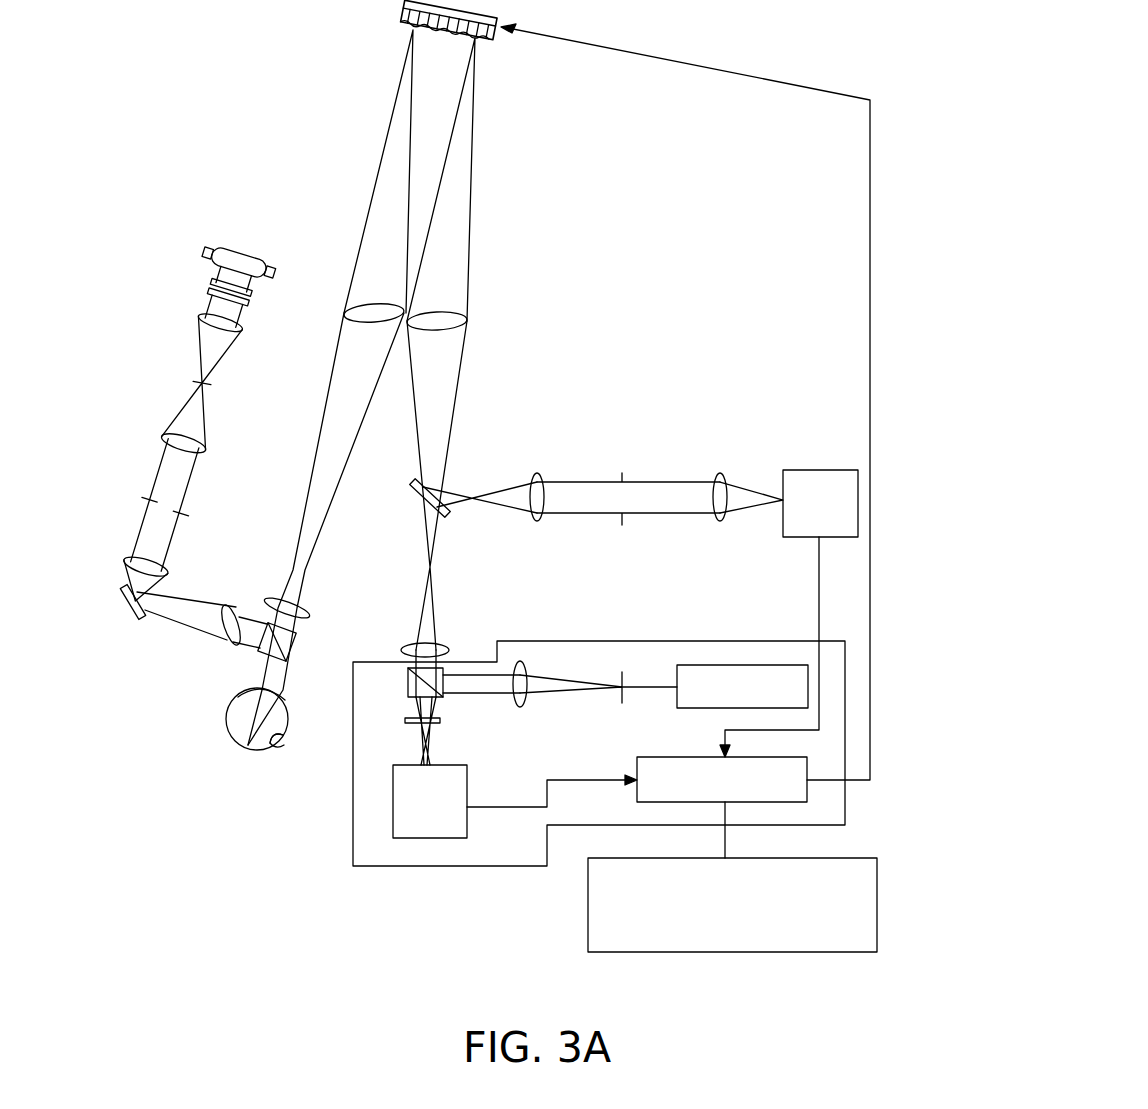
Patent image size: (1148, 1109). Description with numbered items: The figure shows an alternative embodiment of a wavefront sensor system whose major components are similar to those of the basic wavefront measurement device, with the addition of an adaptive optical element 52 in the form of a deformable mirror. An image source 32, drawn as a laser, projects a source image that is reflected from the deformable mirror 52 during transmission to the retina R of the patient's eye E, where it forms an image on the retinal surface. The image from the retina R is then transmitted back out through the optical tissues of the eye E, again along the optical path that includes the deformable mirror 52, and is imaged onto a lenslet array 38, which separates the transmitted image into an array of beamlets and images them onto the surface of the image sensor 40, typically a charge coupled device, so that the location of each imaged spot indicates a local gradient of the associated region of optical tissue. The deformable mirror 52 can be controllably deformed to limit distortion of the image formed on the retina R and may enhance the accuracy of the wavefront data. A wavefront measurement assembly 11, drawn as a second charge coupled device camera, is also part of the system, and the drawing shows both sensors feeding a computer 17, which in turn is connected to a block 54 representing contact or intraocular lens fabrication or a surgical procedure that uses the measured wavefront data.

The adaptive optical element 52 is at (402, 18).
The wavefront measurement assembly 11 is at (808, 470).
The image source 32 is at (745, 665).
The lenslet array 38 is at (442, 720).
The image sensor 40 is at (452, 765).
The computer 17 is at (808, 793).
The contact or intraocular lens fabrication or surgical procedure 54 is at (828, 953).
The eye E is at (219, 733).
The retina R is at (283, 734).